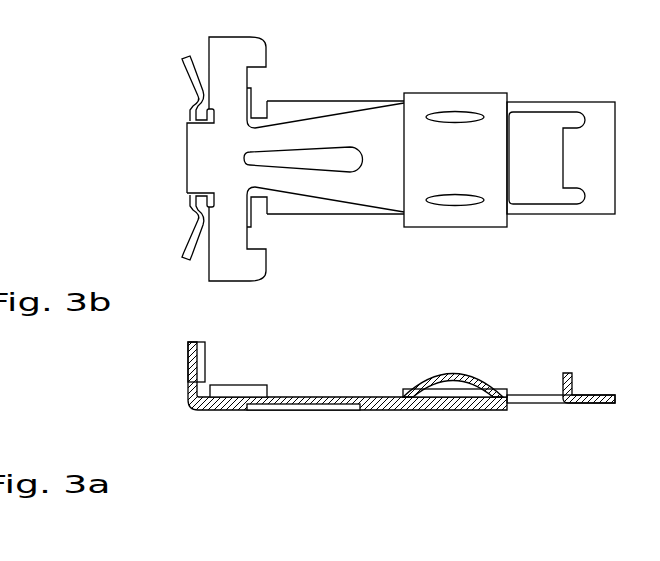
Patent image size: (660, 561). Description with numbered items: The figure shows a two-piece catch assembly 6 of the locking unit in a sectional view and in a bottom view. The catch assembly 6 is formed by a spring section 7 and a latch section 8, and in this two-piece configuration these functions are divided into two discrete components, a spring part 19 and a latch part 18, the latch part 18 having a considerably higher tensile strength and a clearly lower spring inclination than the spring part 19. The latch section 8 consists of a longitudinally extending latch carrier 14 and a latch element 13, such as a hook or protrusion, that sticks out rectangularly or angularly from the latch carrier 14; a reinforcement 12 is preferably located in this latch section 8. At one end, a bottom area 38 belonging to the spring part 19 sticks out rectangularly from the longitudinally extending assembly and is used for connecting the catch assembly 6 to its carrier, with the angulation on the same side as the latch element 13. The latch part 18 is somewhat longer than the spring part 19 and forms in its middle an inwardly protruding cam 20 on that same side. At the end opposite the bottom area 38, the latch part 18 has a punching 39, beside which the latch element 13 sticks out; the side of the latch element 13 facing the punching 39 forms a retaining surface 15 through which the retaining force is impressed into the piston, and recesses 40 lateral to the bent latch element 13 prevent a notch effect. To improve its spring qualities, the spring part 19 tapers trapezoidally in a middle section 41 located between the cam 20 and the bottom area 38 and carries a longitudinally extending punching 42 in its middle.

In FIG. 3A, the catch assembly 6 is at (285, 352).
In FIG. 3A, the spring section 7 is at (187, 458).
In FIG. 3A, the latch section 8 is at (510, 458).
In FIG. 3A, the reinforcement 12 is at (602, 396).
In FIG. 3A, the latch element 13 is at (580, 394).
In FIG. 3A, the latch carrier 14 is at (538, 401).
In FIG. 3B, the retaining surface 15 is at (562, 145).
In FIG. 3A, the retaining surface 15 is at (565, 388).
In FIG. 3B, the latch part 18 is at (301, 112).
In FIG. 3A, the latch part 18 is at (362, 395).
In FIG. 3B, the spring part 19 is at (406, 137).
In FIG. 3A, the spring part 19 is at (431, 410).
In FIG. 3A, the cam 20 is at (458, 375).
In FIG. 3A, the bottom area 38 is at (188, 375).
In FIG. 3B, the punching 39 is at (553, 175).
In FIG. 3B, the recesses 40 is at (575, 117).
In FIG. 3B, the middle section 41 is at (397, 228).
In FIG. 3B, the punching 42 is at (346, 157).